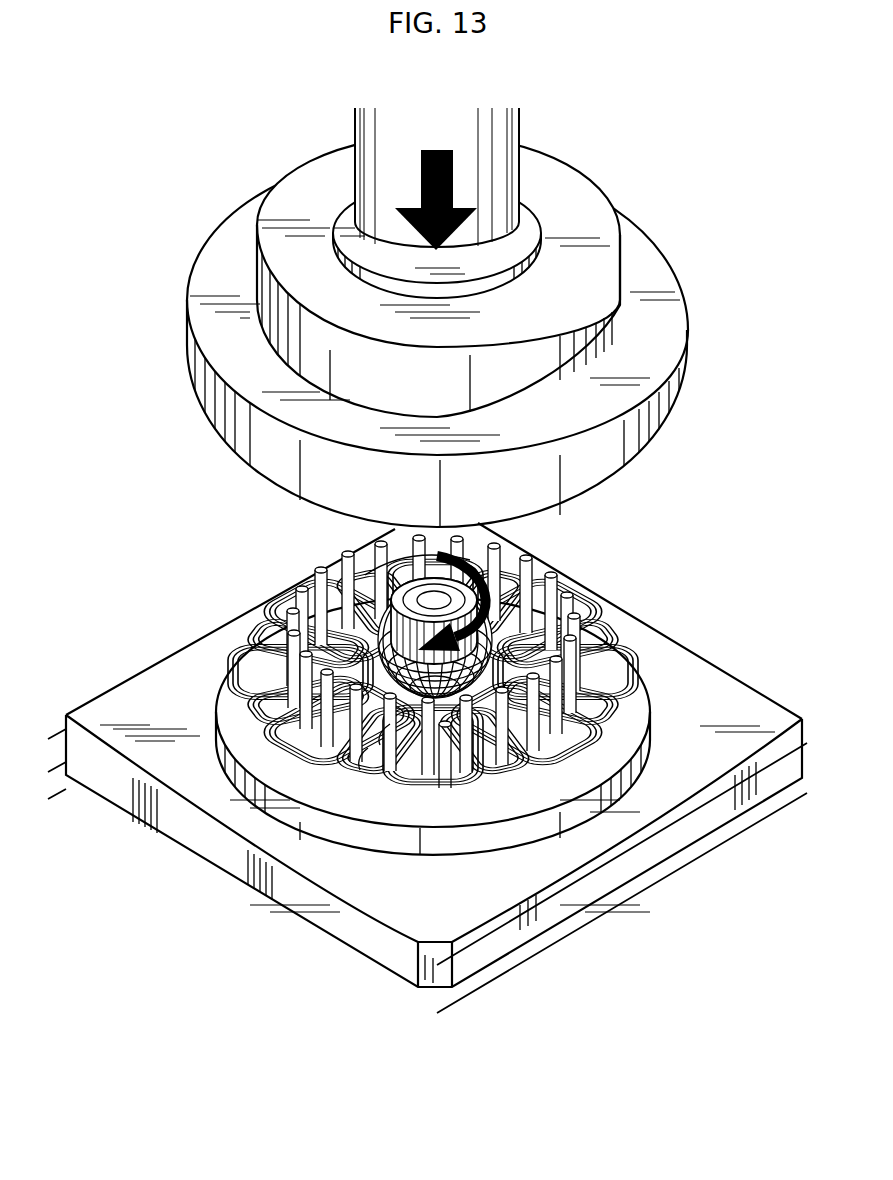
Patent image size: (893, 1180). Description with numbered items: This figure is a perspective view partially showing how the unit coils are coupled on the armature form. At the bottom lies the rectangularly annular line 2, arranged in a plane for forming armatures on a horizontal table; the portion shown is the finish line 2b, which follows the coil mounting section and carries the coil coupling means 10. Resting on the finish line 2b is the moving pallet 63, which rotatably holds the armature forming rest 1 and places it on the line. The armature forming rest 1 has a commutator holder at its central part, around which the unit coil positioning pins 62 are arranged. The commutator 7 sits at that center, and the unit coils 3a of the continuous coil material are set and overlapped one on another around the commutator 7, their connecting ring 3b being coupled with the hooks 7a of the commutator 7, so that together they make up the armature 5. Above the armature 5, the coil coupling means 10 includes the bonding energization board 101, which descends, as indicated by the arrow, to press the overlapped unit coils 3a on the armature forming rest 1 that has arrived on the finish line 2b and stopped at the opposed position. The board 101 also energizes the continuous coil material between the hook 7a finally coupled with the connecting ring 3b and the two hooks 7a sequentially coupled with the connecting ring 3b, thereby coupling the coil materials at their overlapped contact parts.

The coil coupling means 10 is at (187, 295).
The bonding energization board 101 is at (252, 461).
The commutator 7 is at (443, 578).
The hook 7a is at (434, 742).
The armature 5 is at (633, 637).
The armature forming rest 1 is at (617, 740).
The unit coil 3a is at (274, 736).
The connecting ring 3b is at (446, 766).
The unit coil positioning pin 62 is at (380, 742).
The finish line 2b is at (122, 832).
The moving pallet 63 is at (262, 872).
The line 2 is at (532, 1000).